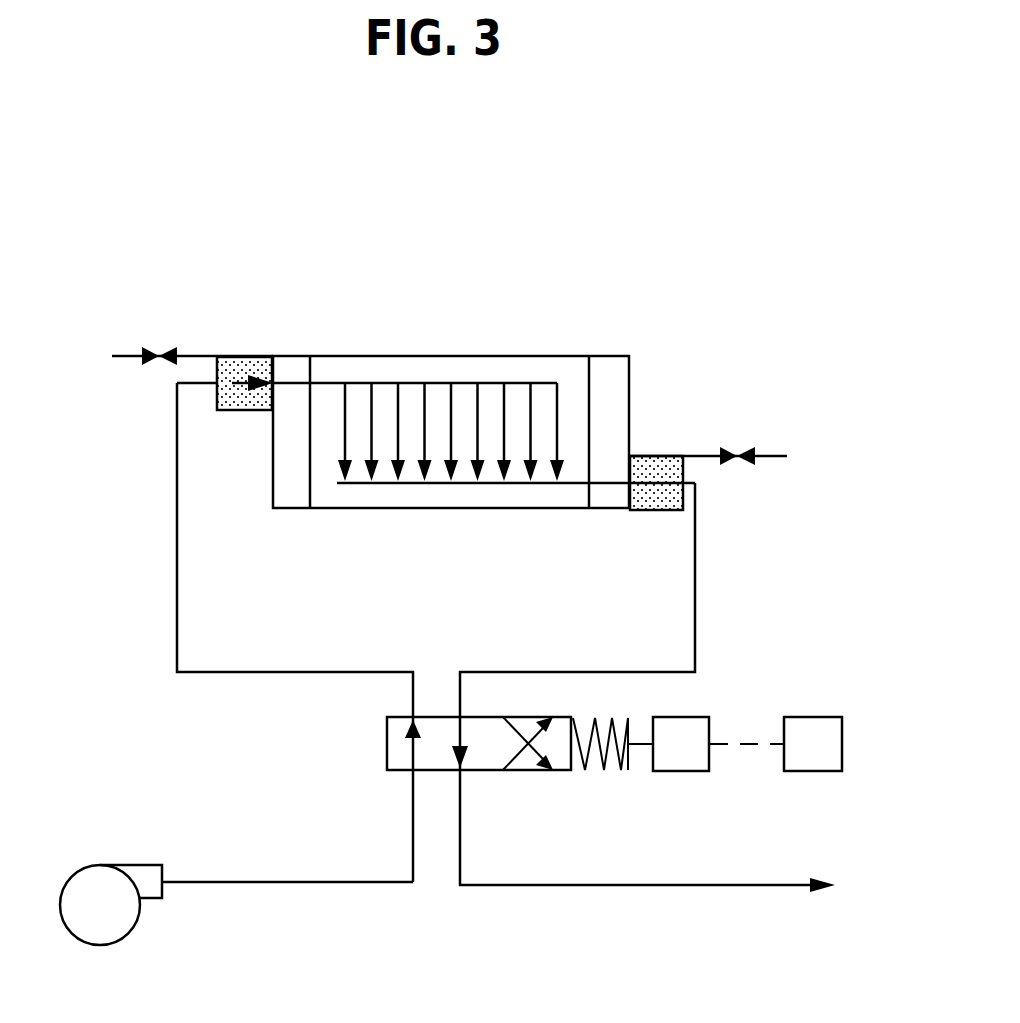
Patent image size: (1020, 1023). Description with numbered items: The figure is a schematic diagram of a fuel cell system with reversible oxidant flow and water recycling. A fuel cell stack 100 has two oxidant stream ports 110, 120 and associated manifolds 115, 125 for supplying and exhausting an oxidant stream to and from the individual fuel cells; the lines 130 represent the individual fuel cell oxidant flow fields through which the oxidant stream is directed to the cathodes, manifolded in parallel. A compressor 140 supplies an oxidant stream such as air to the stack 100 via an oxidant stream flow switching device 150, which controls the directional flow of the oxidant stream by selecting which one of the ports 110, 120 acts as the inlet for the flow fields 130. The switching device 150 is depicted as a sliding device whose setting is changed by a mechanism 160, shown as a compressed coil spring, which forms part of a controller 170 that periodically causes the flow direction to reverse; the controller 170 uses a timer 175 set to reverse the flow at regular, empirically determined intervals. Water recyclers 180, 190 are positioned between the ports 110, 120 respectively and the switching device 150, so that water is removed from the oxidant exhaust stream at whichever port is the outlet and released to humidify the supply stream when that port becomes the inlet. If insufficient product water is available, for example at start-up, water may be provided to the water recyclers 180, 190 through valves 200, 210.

The fuel cell stack 100 is at (378, 228).
The oxidant stream port 110 is at (295, 381).
The manifold 115 is at (383, 381).
The oxidant stream port 120 is at (602, 484).
The manifold 125 is at (460, 484).
The oxidant flow fields 130 is at (425, 428).
The compressor 140 is at (100, 946).
The oxidant stream flow switching device 150 is at (397, 752).
The mechanism 160 is at (600, 770).
The controller 170 is at (697, 722).
The timer 175 is at (827, 722).
The water recycler 180 is at (233, 360).
The water recycler 190 is at (651, 462).
The valve 200 is at (168, 348).
The valve 210 is at (733, 453).